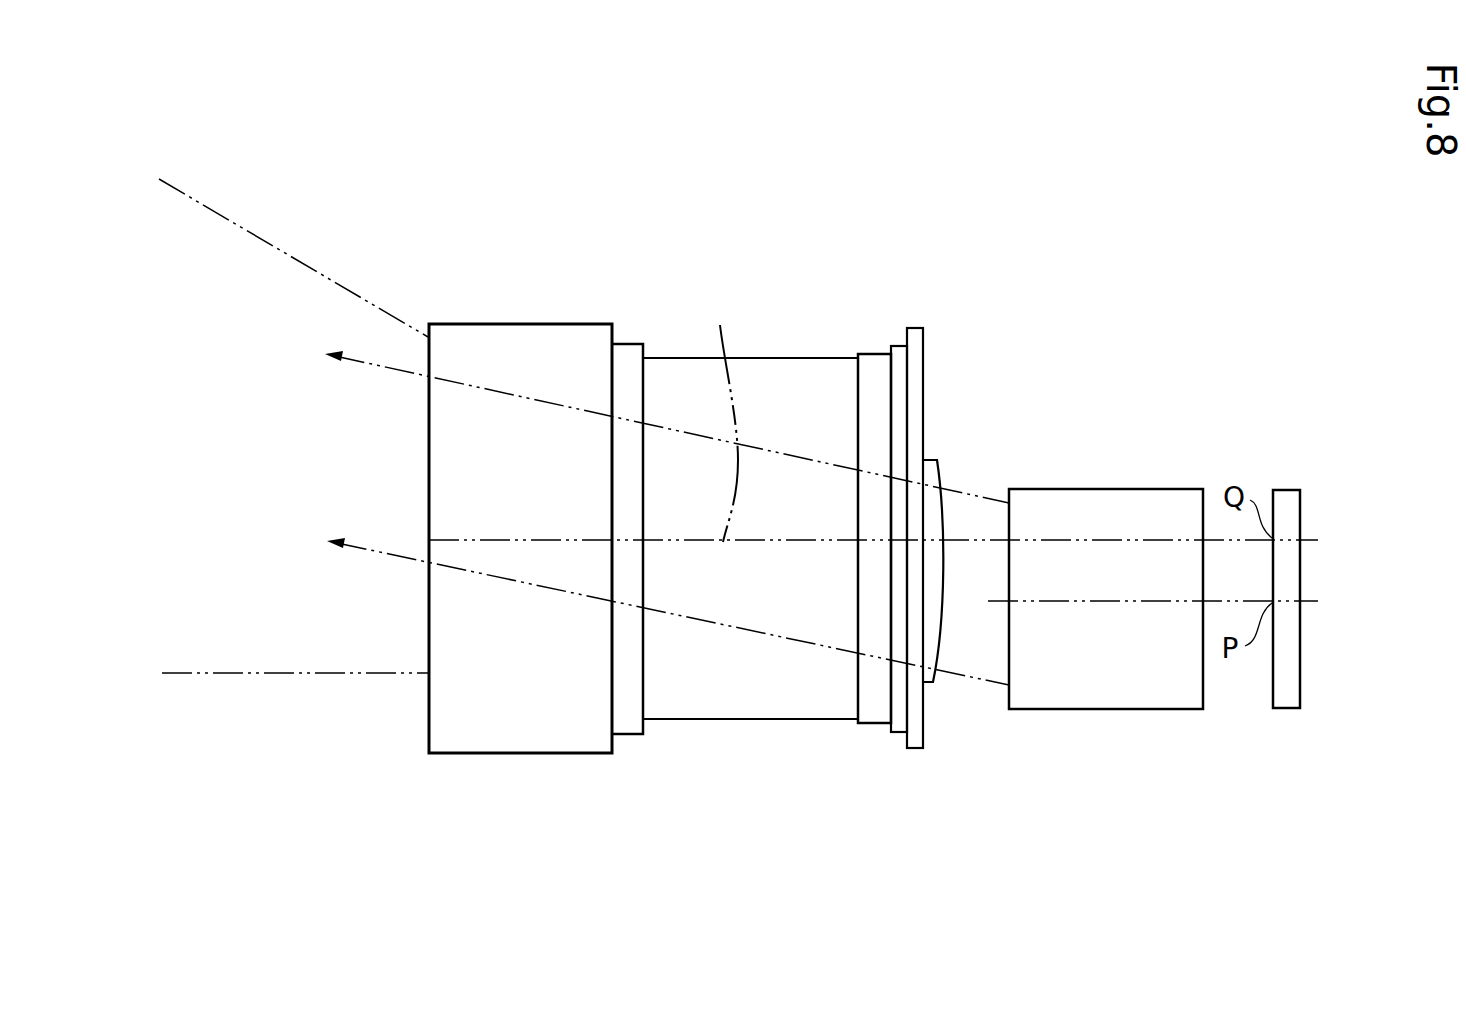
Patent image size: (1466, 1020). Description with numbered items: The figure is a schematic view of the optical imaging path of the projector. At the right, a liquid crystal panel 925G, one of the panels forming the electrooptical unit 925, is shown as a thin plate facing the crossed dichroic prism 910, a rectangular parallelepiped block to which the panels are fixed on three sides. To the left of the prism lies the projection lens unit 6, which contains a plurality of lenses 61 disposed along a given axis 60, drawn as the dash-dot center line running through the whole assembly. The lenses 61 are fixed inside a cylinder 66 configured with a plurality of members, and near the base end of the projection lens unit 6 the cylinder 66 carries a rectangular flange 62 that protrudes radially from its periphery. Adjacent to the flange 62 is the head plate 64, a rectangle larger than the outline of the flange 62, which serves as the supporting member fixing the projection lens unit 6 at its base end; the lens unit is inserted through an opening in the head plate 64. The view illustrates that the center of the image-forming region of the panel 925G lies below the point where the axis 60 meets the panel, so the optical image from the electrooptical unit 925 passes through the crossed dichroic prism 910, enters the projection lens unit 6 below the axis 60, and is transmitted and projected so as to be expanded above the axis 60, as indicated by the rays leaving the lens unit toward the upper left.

The projection lens unit 6 is at (522, 345).
The axis 60 is at (720, 416).
The lenses 61 is at (930, 460).
The flange 62 is at (898, 348).
The head plate 64 is at (918, 330).
The cylinder 66 is at (798, 358).
The crossed dichroic prism 910 is at (1066, 475).
The electrooptical unit 925 is at (1306, 532).
The liquid crystal panel 925G is at (1288, 490).